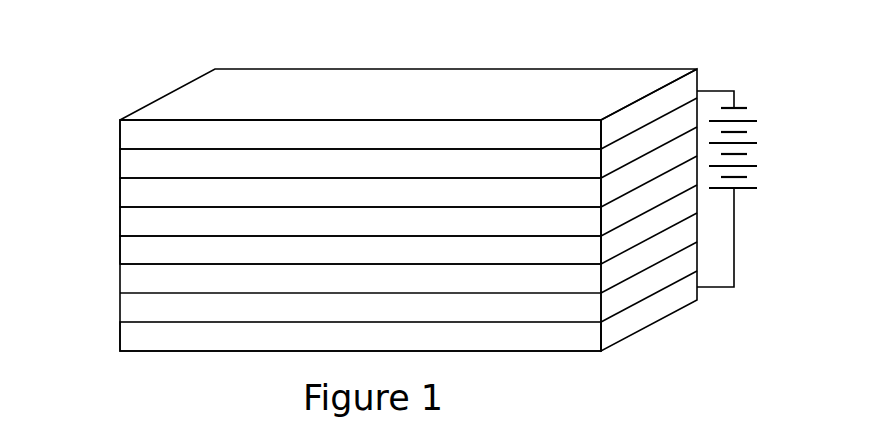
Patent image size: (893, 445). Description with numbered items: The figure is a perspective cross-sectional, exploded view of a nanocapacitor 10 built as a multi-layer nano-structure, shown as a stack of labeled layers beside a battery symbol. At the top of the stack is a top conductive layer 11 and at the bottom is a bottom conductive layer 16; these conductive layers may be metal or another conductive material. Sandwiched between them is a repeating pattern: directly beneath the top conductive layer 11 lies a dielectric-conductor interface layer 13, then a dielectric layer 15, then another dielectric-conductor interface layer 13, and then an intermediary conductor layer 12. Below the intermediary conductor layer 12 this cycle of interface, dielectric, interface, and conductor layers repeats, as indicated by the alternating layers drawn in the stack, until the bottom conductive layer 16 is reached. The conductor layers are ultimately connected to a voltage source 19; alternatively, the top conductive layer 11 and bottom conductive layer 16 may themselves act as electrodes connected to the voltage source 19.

The nanocapacitor 10 is at (147, 81).
The top conductive layer 11 is at (120, 138).
The intermediary conductor layer 12 is at (120, 251).
The dielectric-conductor interface layer 13 is at (120, 166).
The dielectric layer 15 is at (120, 193).
The bottom conductive layer 16 is at (120, 336).
The voltage source 19 is at (740, 189).